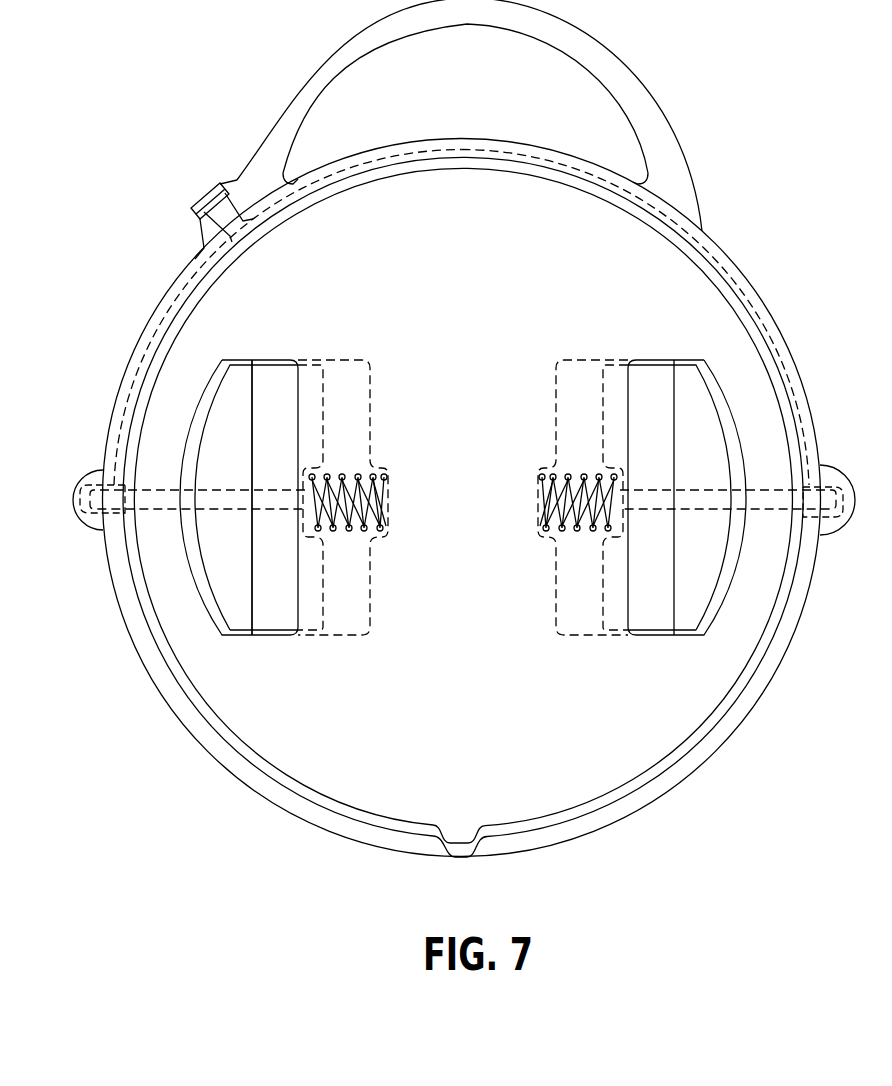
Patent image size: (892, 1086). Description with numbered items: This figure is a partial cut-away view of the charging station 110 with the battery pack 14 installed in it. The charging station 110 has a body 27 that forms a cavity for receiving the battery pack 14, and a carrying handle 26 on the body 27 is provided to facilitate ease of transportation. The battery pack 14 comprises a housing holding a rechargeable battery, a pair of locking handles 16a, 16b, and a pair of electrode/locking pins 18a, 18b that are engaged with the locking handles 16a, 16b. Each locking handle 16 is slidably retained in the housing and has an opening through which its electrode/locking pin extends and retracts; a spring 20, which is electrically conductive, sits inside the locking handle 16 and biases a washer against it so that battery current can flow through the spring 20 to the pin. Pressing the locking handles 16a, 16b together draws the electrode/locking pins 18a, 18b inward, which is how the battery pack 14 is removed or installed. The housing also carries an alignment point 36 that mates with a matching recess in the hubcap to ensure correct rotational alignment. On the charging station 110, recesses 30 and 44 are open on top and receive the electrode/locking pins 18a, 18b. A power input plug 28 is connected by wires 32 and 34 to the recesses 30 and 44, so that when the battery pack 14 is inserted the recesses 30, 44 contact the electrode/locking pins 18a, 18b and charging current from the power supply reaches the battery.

The battery pack 14 is at (560, 765).
The locking handle 16 is at (278, 606).
The locking handle 16a is at (273, 368).
The locking handle 16b is at (657, 383).
The electrode/locking pin 18a is at (157, 507).
The electrode/locking pin 18b is at (764, 514).
The spring 20 is at (553, 475).
The carrying handle 26 is at (271, 130).
The body 27 is at (735, 712).
The power input plug 28 is at (197, 194).
The recess 30 is at (97, 470).
The wire 32 is at (150, 346).
The wire 34 is at (789, 372).
The alignment point 36 is at (461, 828).
The recess 44 is at (833, 468).
The charging station 110 is at (715, 88).